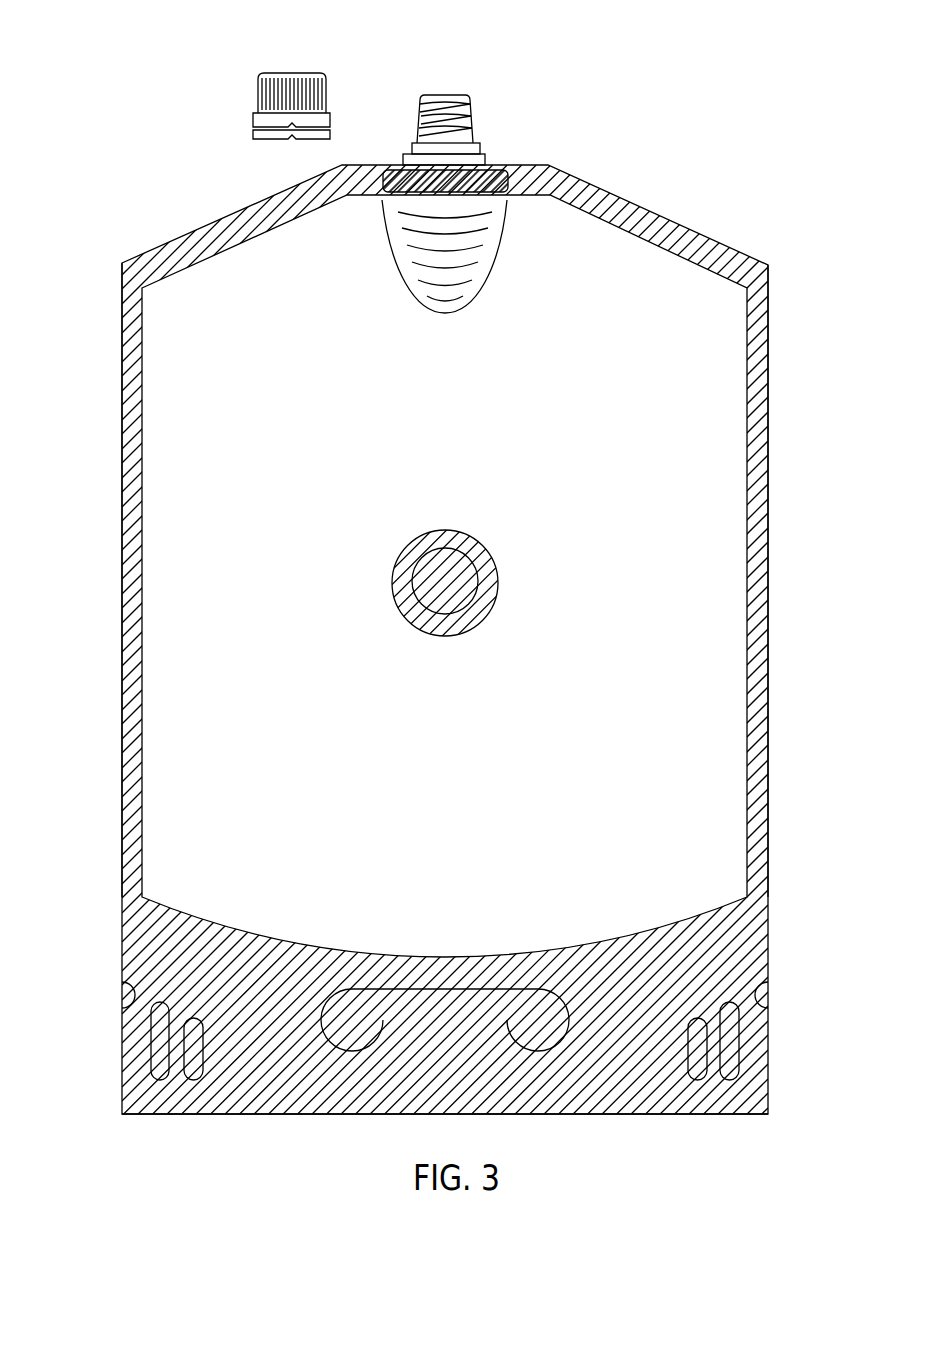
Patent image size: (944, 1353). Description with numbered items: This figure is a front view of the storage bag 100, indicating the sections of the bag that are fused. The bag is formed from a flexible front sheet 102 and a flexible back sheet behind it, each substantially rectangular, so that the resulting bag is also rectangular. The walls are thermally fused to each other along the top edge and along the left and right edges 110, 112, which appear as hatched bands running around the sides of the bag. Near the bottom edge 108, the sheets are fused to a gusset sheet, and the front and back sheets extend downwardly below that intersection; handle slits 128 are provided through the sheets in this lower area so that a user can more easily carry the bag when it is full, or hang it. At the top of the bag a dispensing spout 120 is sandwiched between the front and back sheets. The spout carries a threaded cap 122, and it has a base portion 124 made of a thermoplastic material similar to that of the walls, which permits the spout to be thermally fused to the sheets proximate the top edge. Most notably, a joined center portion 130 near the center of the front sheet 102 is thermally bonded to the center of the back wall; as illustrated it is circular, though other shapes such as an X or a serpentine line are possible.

The flexible container 100 is at (196, 185).
The front sheet 102 is at (733, 557).
The bottom edge 108 is at (612, 1080).
The left edge 110 is at (131, 556).
The right edge 112 is at (770, 760).
The spout 120 is at (467, 93).
The threaded cap 122 is at (300, 70).
The base portion 124 is at (497, 177).
The handle slits 128 is at (322, 1033).
The joined center portion 130 is at (470, 550).